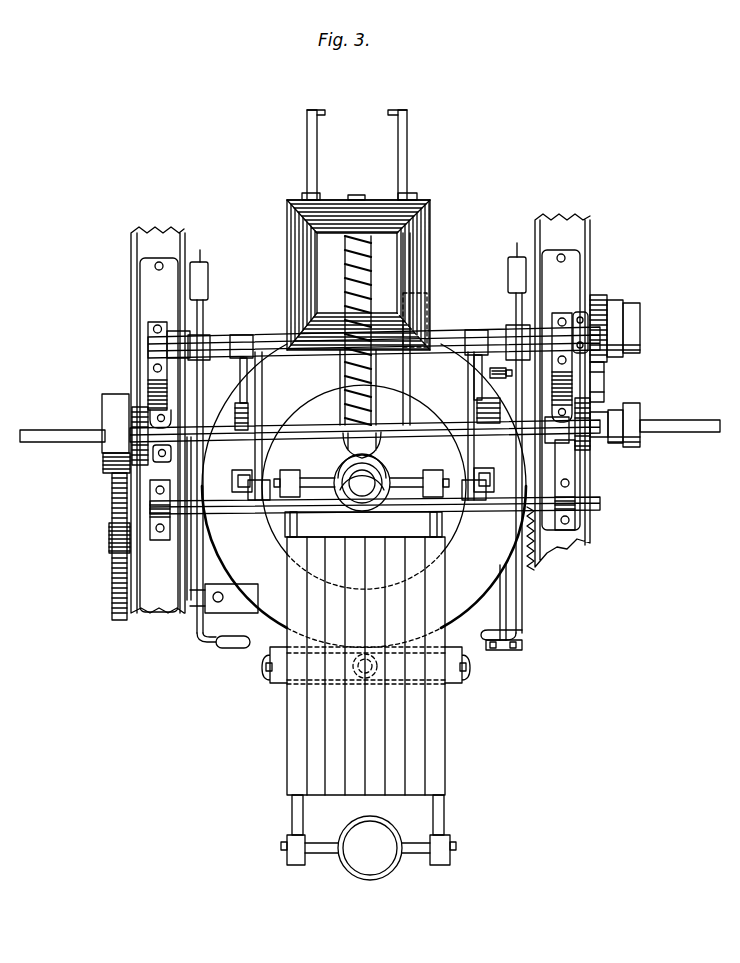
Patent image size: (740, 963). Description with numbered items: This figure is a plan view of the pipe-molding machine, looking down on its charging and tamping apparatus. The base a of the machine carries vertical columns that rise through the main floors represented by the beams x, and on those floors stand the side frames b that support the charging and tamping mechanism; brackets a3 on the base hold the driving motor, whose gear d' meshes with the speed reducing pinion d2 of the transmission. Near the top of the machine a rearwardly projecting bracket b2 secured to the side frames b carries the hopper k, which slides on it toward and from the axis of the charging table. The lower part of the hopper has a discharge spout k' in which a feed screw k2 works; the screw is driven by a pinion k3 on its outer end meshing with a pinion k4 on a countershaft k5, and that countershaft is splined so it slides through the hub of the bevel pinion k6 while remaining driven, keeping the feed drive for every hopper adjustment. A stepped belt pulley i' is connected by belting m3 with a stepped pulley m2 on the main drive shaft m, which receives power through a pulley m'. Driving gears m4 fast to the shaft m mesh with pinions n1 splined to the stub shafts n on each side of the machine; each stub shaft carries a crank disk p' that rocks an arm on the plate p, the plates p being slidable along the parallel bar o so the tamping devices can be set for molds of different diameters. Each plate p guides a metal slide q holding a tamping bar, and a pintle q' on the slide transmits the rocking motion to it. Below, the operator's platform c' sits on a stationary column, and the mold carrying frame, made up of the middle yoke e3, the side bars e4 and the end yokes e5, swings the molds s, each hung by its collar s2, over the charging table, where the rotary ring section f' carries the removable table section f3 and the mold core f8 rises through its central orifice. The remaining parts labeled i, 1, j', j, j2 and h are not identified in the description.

The rearwardly projecting bracket b2 is at (305, 168).
The pinion k3 is at (350, 196).
The pinion k4 is at (424, 199).
The hopper k is at (372, 275).
The countershaft k5 is at (414, 290).
The bevel pinion k6 is at (422, 308).
The feed screw k2 is at (343, 364).
The discharge spout k' is at (341, 387).
The belting m3 is at (604, 372).
The main drive shaft m is at (365, 440).
The stub shaft n is at (60, 431).
The pulley m' is at (114, 410).
The pinion n1 is at (104, 462).
The speed reducing pinion d2 is at (111, 583).
The gear d' is at (99, 541).
The beams x is at (165, 612).
The side frames b is at (147, 325).
The stepped belt pulley i' is at (433, 345).
The driving gears m4 is at (592, 448).
The stepped pulley m2 is at (635, 410).
The lever i is at (208, 453).
The rod 1 is at (222, 590).
The base a is at (246, 612).
The brackets a3 is at (232, 590).
The removable table section f3 is at (447, 543).
The rotary ring section f' is at (369, 511).
The plates p is at (359, 368).
The crank disk p' is at (367, 413).
The screw j' is at (493, 364).
The pintle q' is at (233, 476).
The metal slide q is at (488, 471).
The rod j is at (515, 446).
The rod j2 is at (508, 605).
The ratchet h is at (540, 538).
The molds s is at (386, 476).
The mold core f8 is at (378, 462).
The end yokes e5 is at (320, 470).
The parallel bar o is at (370, 510).
The collar s2 is at (340, 497).
The side arms or bars e4 is at (284, 530).
The platform c' is at (366, 666).
The middle yoke section e3 is at (452, 684).